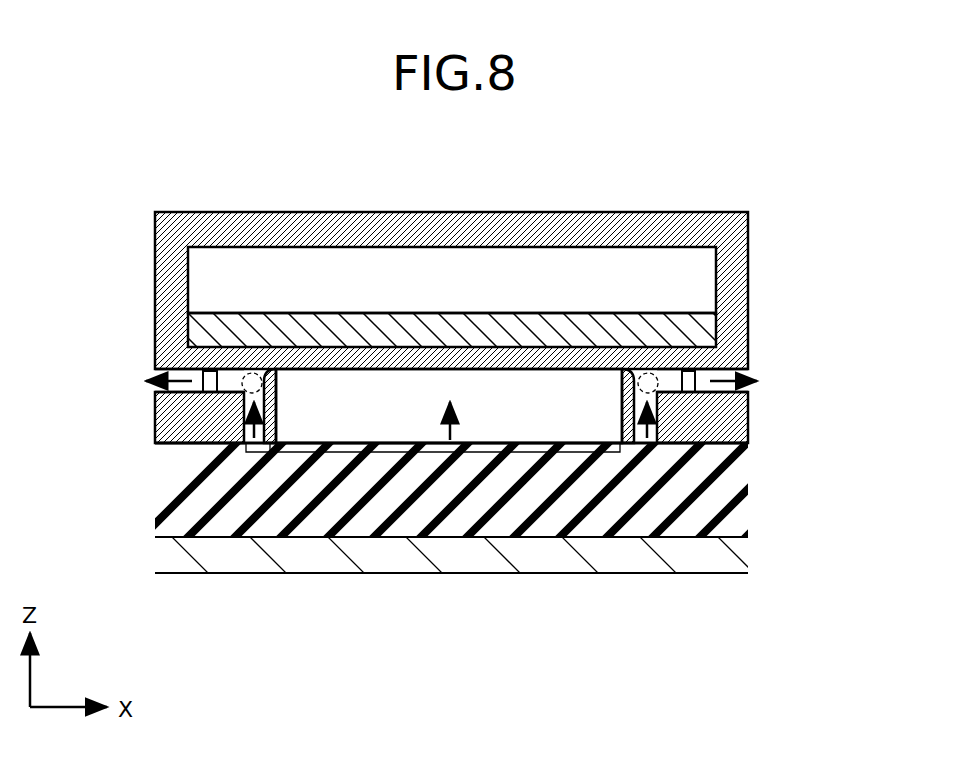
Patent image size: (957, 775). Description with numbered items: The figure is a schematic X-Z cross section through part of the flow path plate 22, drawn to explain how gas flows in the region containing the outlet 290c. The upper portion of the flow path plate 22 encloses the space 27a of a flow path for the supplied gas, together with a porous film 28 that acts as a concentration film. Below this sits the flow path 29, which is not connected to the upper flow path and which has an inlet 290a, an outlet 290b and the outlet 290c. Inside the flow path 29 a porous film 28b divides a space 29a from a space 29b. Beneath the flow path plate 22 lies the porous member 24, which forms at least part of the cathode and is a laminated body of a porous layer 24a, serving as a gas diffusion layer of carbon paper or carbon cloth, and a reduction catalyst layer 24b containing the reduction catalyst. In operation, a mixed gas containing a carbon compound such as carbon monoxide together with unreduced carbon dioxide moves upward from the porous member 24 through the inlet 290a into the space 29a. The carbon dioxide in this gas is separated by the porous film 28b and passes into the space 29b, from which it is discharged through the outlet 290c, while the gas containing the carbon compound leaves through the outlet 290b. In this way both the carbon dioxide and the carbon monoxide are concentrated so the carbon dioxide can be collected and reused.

The flow path plate 22 is at (766, 210).
The space inside the flow path 27a is at (452, 280).
The porous film 28 is at (316, 328).
The porous film 28b is at (210, 376).
The flow path 29 is at (238, 368).
The space 29a is at (167, 645).
The space 29b is at (175, 397).
The inlet 290a is at (258, 452).
The outlet 290b is at (205, 371).
The outlet 290c is at (140, 371).
The porous member 24 is at (511, 507).
The porous layer 24a is at (766, 445).
The reduction catalyst layer 24b is at (766, 537).